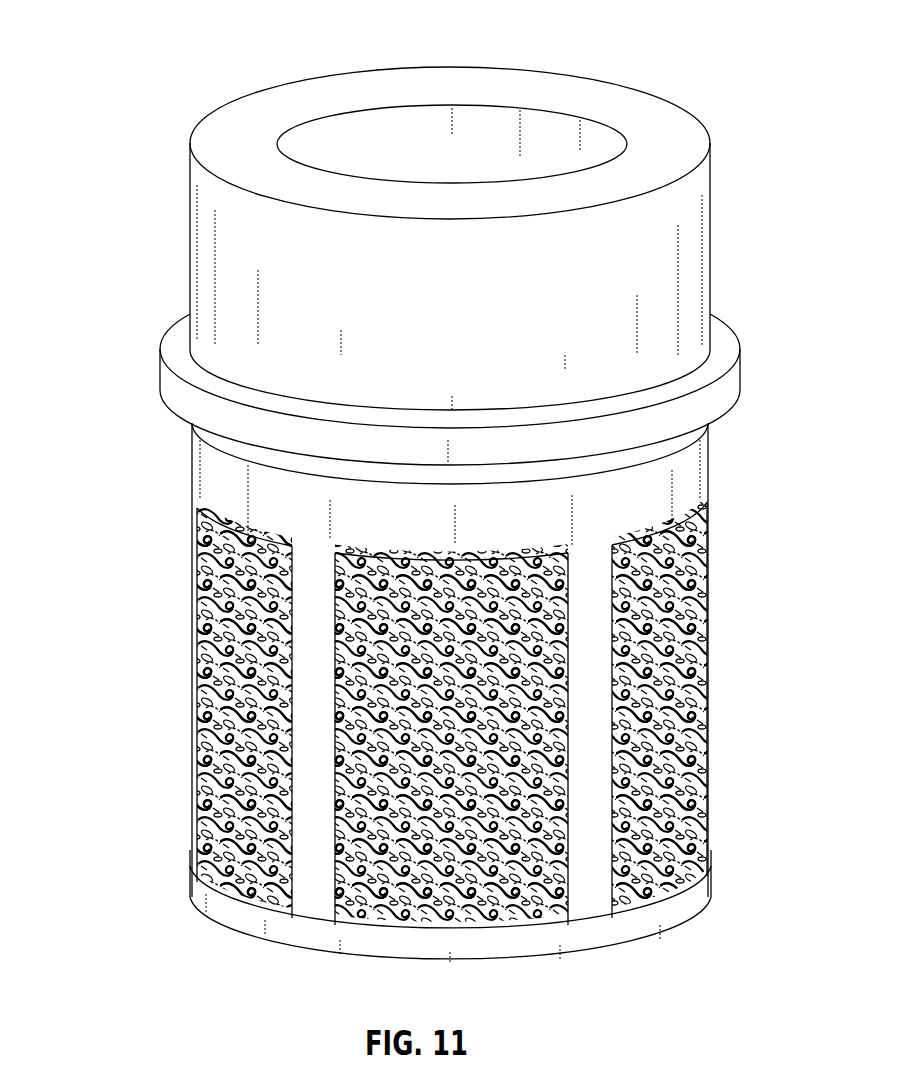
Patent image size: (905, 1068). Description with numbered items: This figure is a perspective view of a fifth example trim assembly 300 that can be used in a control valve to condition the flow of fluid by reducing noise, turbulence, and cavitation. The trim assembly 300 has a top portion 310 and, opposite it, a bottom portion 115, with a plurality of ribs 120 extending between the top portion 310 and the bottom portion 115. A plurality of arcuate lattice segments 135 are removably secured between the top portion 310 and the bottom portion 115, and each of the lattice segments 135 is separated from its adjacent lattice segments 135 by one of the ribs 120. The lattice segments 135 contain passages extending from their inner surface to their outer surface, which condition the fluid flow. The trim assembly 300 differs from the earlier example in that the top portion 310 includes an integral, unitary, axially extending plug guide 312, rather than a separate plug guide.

The trim assembly 300 is at (196, 48).
The plug guide 312 is at (190, 252).
The top portion 310 is at (162, 321).
The ribs 120 is at (316, 703).
The lattice segments 135 is at (212, 792).
The bottom portion 115 is at (428, 948).